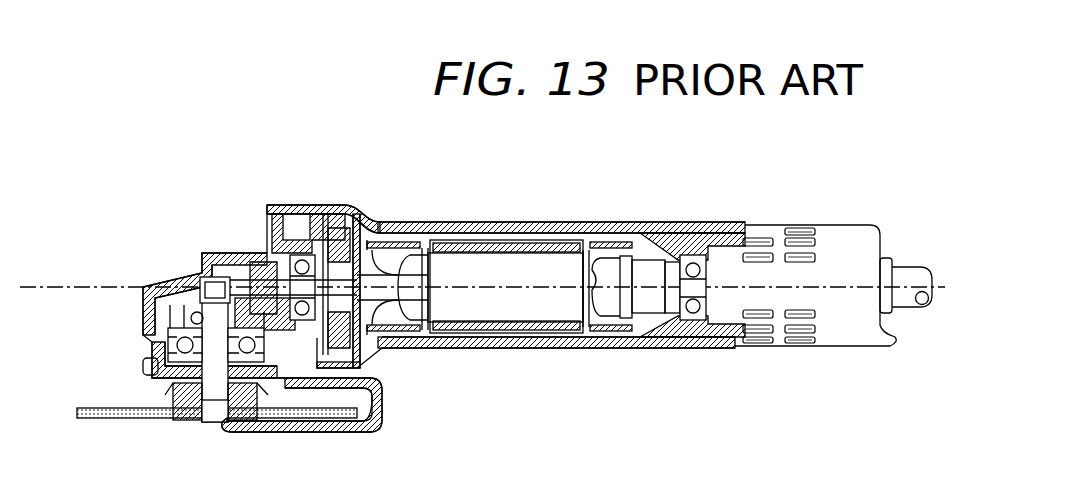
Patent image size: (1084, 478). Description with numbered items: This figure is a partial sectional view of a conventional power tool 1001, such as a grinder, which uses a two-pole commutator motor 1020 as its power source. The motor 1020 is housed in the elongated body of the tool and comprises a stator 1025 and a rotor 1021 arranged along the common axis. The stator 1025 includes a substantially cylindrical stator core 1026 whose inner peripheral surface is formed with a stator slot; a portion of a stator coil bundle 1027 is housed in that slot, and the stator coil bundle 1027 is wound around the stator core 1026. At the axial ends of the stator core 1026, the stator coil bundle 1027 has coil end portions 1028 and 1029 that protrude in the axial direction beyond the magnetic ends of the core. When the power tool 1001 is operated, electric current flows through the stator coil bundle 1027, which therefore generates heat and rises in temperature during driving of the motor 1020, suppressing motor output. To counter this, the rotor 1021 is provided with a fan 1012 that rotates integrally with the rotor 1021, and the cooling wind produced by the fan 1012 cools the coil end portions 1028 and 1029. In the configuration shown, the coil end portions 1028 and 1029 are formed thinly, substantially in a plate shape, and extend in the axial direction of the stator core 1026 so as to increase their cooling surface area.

The power tool 1001 is at (770, 192).
The fan 1012 is at (330, 213).
The two-pole commutator motor 1020 is at (586, 228).
The rotor 1021 is at (486, 307).
The stator 1025 is at (538, 332).
The stator core 1026 is at (513, 240).
The stator coil bundle 1027 is at (392, 322).
The coil end portion 1028 is at (390, 258).
The coil end portion 1029 is at (613, 320).